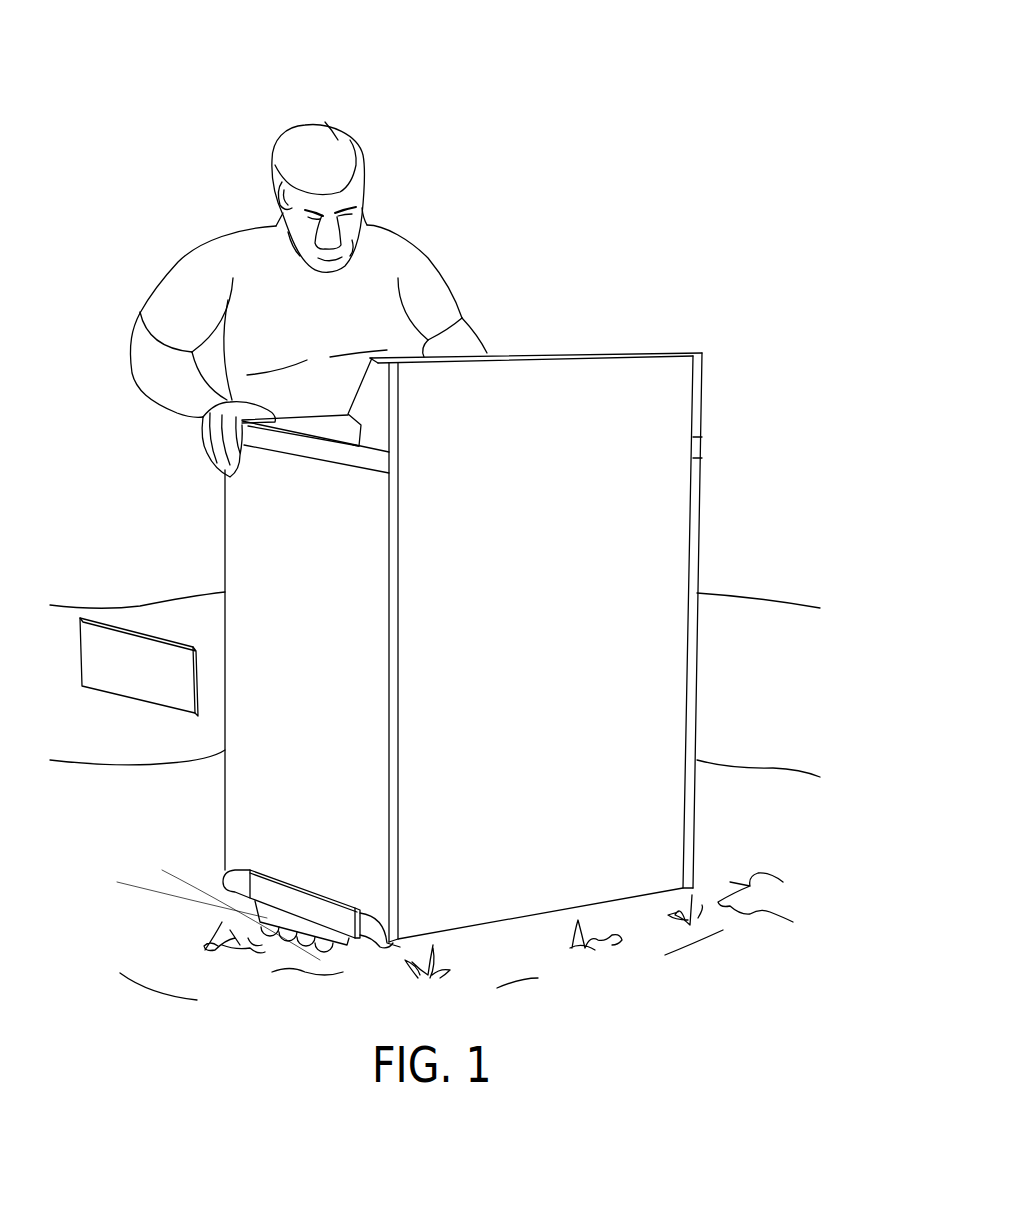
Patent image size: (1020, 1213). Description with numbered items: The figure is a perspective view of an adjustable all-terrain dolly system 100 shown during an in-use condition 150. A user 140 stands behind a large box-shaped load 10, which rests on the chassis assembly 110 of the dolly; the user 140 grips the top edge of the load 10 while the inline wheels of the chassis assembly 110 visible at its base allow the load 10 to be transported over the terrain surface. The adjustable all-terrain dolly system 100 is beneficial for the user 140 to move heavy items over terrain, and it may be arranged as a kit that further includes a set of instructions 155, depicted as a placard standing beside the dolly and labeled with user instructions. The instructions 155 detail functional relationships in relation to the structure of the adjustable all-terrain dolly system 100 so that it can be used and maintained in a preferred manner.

The adjustable all-terrain dolly system 100 is at (553, 86).
The chassis assembly 110 is at (615, 114).
The load 10 is at (700, 492).
The in-use condition 150 is at (672, 157).
The user 140 is at (201, 219).
The set of instructions 155 is at (160, 704).